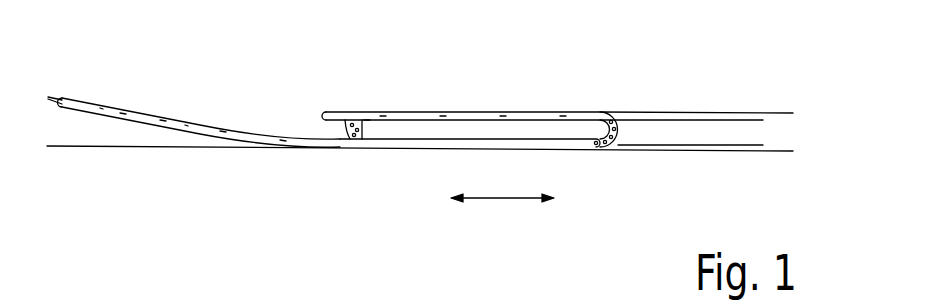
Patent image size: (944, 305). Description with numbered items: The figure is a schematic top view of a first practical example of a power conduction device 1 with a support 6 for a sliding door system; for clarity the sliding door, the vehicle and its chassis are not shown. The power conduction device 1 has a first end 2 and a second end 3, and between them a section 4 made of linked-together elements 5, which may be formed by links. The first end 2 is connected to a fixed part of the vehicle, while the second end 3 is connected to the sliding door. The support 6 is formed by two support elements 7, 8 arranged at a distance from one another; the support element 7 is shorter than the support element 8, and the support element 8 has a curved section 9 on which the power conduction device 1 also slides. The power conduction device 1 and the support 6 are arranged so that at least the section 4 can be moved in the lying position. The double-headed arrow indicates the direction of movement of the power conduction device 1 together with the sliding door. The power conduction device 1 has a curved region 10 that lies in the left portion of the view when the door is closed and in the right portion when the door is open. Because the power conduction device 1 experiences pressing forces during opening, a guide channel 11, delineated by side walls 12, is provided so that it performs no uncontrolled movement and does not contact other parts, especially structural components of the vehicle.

The power conduction device 1 is at (202, 104).
The first end 2 is at (325, 110).
The second end 3 is at (60, 100).
The section 4 is at (212, 127).
The linked-together elements 5 is at (362, 148).
The support 6 is at (766, 135).
The support element 7 is at (635, 115).
The support element 8 is at (673, 145).
The curved section 9 is at (137, 123).
The curved region 10 is at (370, 115).
The guide channel 11 is at (774, 100).
The side walls 12 is at (707, 148).